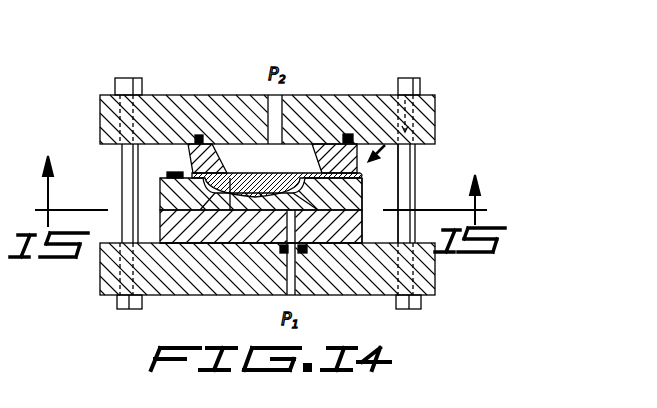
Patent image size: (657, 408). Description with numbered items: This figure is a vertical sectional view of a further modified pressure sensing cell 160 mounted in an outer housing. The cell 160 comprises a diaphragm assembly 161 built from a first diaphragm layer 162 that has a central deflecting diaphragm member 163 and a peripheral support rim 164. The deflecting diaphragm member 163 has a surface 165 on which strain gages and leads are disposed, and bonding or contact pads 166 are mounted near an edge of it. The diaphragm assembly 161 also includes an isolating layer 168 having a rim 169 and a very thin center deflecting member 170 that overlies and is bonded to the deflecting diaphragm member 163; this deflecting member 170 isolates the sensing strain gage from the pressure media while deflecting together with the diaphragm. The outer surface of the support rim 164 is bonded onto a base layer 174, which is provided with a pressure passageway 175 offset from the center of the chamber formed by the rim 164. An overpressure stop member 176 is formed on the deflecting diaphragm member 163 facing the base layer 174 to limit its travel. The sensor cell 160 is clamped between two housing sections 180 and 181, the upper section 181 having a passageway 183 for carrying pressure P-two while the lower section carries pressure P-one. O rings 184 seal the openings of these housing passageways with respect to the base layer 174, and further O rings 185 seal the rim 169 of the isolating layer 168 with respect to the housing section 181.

The pressure sensing cell 160 is at (437, 117).
The diaphragm assembly 161 is at (370, 180).
The first diaphragm layer 162 is at (368, 196).
The central deflecting diaphragm member 163 is at (232, 222).
The peripheral support rim 164 is at (160, 188).
The surface 165 is at (187, 170).
The bonding or contact pads 166 is at (170, 172).
The isolating layer 168 is at (212, 146).
The rim 169 is at (310, 178).
The center deflecting member 170 is at (258, 165).
The base layer 174 is at (207, 230).
The pressure passageway 175 is at (312, 173).
The overpressure stop member 176 is at (265, 200).
The housing section 180 is at (102, 283).
The housing section 181 is at (100, 99).
The passageway 183 is at (300, 94).
The O rings 184 is at (308, 253).
The O rings 185 is at (390, 74).